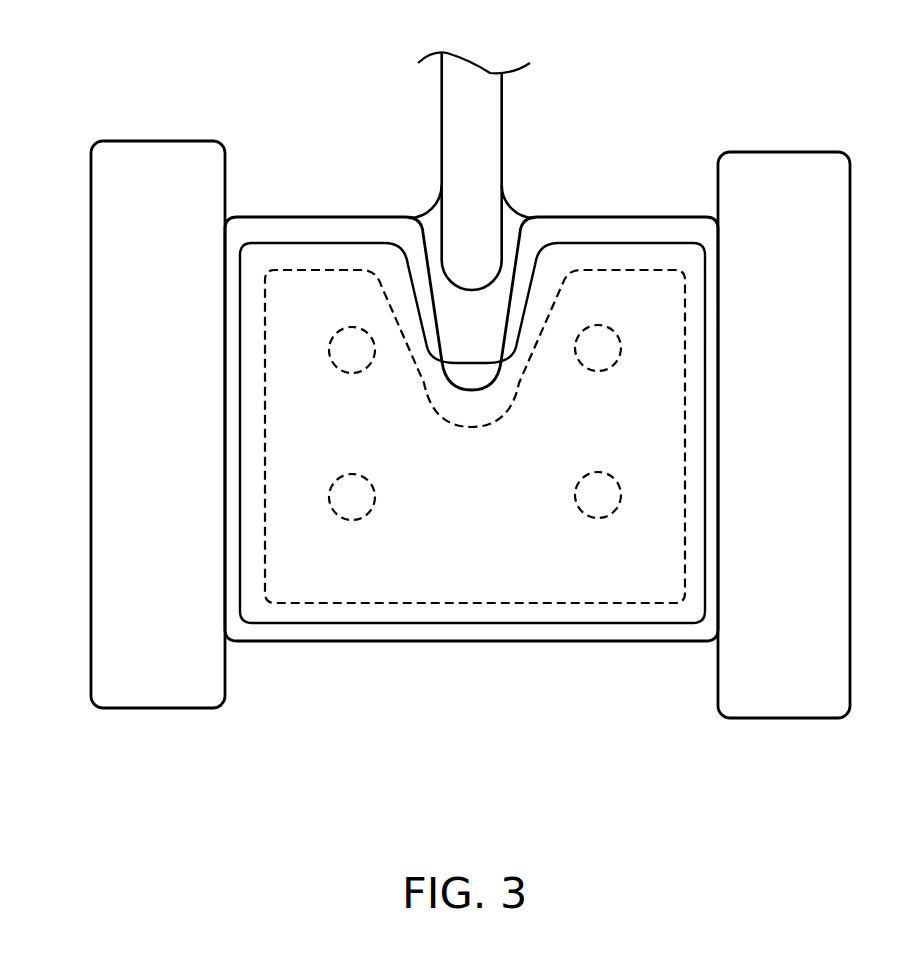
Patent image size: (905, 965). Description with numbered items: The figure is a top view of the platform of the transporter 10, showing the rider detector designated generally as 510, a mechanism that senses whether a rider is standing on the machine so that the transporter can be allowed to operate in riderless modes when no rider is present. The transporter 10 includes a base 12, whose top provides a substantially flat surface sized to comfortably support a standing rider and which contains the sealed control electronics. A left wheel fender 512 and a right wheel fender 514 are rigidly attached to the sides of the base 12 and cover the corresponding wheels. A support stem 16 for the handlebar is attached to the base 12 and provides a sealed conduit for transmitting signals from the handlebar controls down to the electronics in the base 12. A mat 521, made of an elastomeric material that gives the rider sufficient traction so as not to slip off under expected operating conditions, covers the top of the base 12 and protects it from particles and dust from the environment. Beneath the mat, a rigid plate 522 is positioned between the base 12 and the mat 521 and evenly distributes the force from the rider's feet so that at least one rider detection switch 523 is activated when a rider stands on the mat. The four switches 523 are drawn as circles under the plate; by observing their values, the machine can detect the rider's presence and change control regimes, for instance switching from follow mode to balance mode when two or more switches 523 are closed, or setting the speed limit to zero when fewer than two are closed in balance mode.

The transporter 10 is at (55, 80).
The base 12 is at (267, 642).
The support stem 16 is at (502, 110).
The rider detector 510 is at (642, 136).
The left wheel fender 512 is at (147, 710).
The right wheel fender 514 is at (788, 720).
The mat 521 is at (387, 623).
The plate 522 is at (515, 603).
The rider detection switch 523 is at (343, 327).